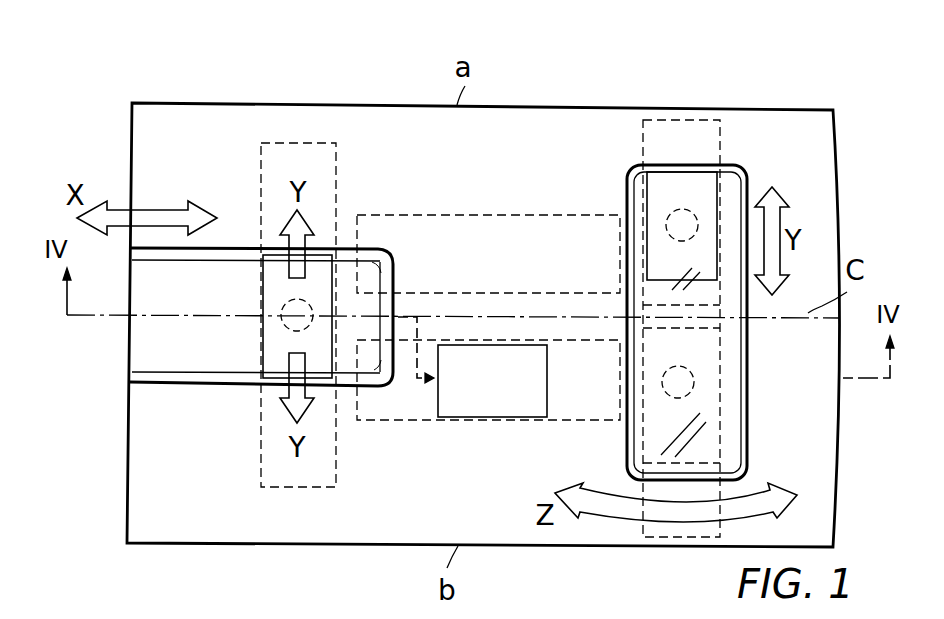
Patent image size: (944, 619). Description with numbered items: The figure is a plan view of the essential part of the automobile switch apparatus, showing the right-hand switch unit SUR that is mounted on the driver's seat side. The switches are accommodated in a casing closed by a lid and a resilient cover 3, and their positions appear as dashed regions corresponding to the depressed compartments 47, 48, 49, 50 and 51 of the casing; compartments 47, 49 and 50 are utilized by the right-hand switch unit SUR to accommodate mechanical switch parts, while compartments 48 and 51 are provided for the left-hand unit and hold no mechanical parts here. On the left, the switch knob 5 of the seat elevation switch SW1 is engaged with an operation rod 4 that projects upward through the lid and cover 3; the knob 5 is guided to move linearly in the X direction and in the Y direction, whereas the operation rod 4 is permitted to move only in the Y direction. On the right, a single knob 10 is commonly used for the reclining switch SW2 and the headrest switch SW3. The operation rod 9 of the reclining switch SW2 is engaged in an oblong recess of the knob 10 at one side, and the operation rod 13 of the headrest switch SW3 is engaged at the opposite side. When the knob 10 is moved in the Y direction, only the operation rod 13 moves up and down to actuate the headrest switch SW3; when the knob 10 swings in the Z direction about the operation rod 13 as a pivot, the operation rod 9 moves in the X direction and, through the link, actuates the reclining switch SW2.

The resilient cover 3 is at (228, 525).
The operation rod 4 is at (275, 360).
The switch knob 5 is at (148, 352).
The operation rod 9 is at (695, 392).
The knob 10 is at (738, 432).
The operation rod 13 is at (667, 220).
The depressed compartment 47 is at (312, 142).
The depressed compartment 48 is at (455, 215).
The depressed compartment 49 is at (428, 424).
The depressed compartment 50 is at (675, 125).
The depressed compartment 51 is at (700, 537).
The seat elevation switch SW1 is at (290, 332).
The reclining switch SW2 is at (492, 412).
The headrest switch SW3 is at (697, 190).
The right-hand switch unit SUR is at (251, 103).